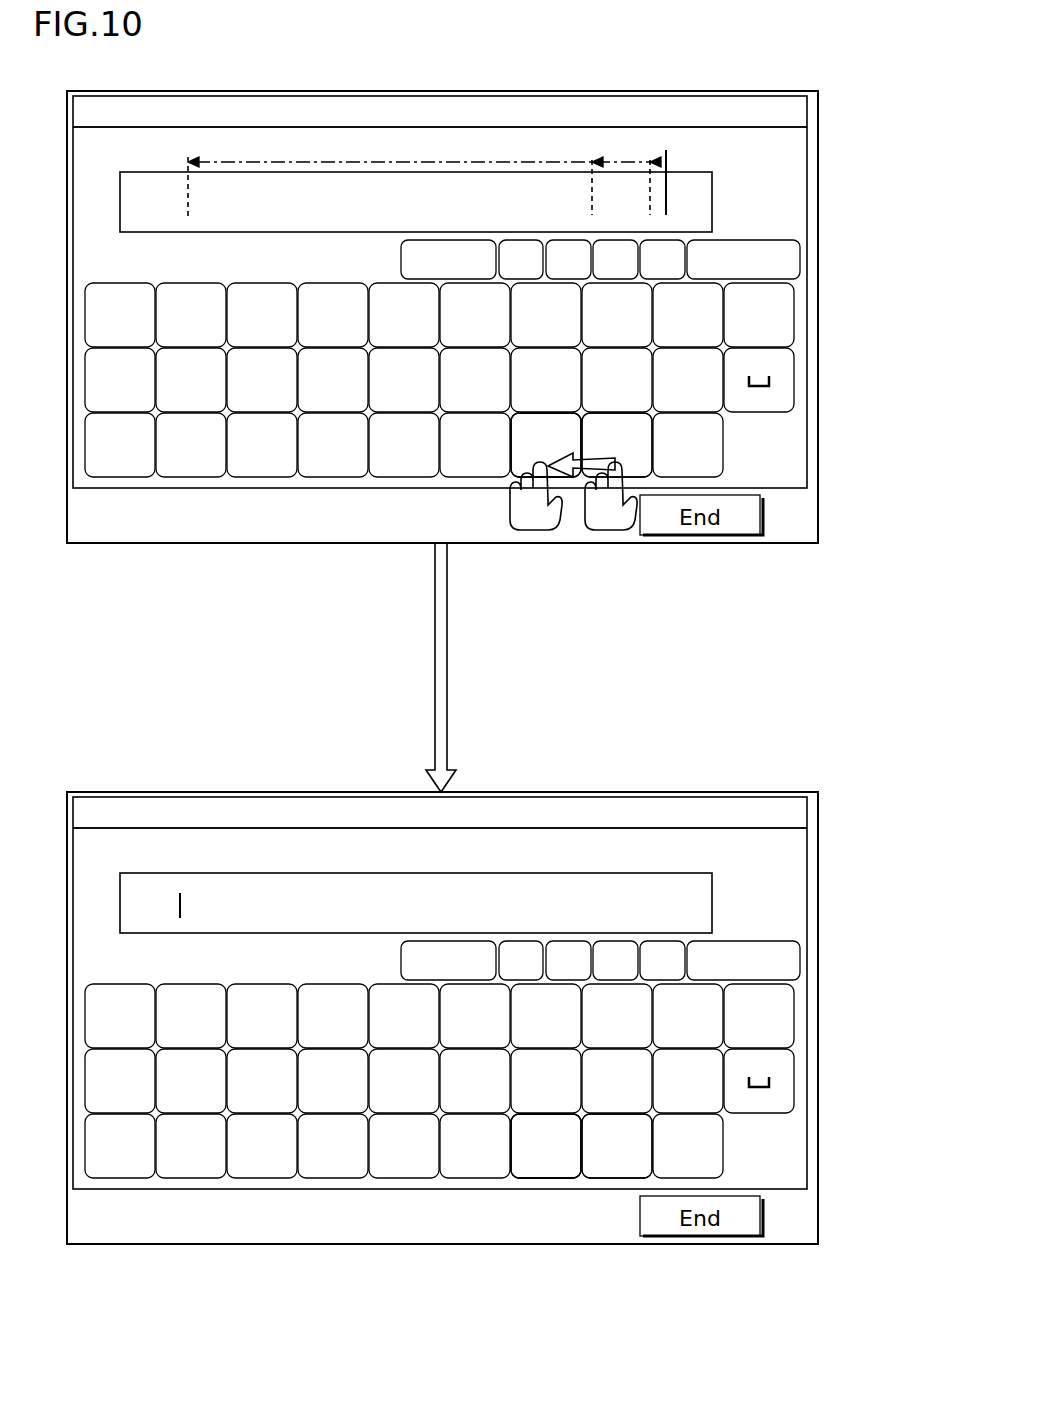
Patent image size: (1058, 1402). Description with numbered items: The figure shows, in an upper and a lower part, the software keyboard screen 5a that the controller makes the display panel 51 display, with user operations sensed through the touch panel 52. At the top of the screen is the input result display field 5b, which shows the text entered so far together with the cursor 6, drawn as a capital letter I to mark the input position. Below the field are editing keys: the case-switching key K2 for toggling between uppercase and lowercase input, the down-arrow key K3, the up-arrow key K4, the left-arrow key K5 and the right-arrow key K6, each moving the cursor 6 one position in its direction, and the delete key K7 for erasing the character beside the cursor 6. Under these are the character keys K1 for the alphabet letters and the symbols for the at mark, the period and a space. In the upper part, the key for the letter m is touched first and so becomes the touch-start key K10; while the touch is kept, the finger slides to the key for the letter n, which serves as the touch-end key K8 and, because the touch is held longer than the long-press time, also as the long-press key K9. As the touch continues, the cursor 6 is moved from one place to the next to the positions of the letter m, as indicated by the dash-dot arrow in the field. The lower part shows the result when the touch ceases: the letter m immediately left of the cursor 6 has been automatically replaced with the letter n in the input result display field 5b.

The software keyboard screen 5a is at (800, 207).
The input result display field 5b is at (700, 198).
The cursor 6 is at (590, 195).
The display panel 51 is at (800, 113).
The touch panel 52 is at (800, 113).
The character keys K1 is at (815, 287).
The case-switching key K2 is at (400, 259).
The down-arrow key K3 is at (512, 264).
The up-arrow key K4 is at (555, 264).
The left-arrow key K5 is at (602, 272).
The right-arrow key K6 is at (675, 270).
The delete key K7 is at (797, 262).
The touch-end key K8 is at (530, 450).
The long-press key K9 is at (530, 450).
The touch-start key K10 is at (635, 470).